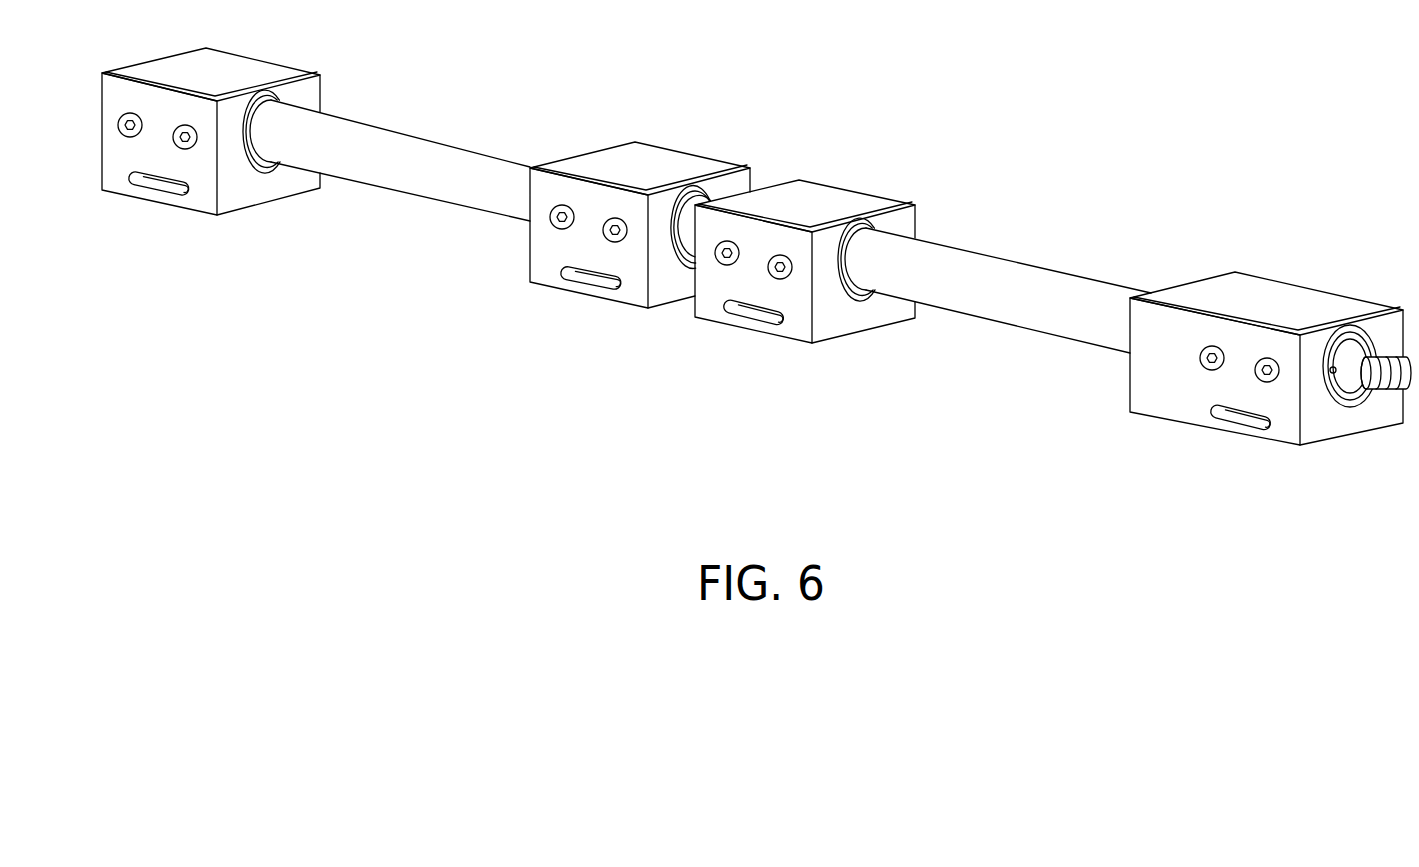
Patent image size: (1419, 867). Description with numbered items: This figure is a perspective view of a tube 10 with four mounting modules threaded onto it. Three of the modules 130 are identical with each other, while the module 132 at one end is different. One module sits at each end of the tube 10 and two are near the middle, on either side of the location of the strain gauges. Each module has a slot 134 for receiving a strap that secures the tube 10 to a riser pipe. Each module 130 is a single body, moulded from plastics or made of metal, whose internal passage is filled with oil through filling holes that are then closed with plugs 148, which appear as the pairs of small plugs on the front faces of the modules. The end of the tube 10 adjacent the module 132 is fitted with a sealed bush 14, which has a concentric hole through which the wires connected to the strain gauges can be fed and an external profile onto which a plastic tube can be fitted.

The tube 10 is at (488, 157).
The sealed bush 14 is at (1363, 393).
The module 130 is at (263, 188).
The module 132 is at (1152, 407).
The slot 134 is at (158, 190).
The plug 148 is at (731, 243).